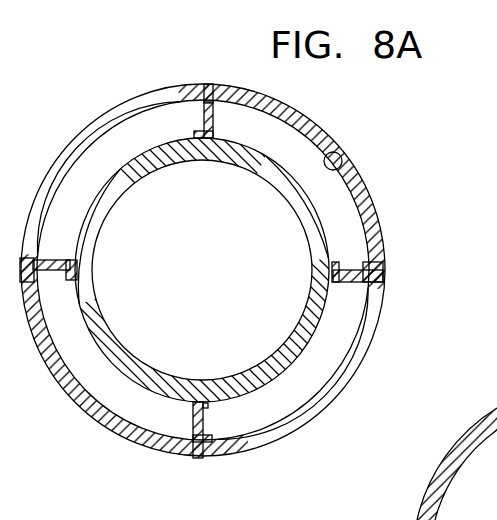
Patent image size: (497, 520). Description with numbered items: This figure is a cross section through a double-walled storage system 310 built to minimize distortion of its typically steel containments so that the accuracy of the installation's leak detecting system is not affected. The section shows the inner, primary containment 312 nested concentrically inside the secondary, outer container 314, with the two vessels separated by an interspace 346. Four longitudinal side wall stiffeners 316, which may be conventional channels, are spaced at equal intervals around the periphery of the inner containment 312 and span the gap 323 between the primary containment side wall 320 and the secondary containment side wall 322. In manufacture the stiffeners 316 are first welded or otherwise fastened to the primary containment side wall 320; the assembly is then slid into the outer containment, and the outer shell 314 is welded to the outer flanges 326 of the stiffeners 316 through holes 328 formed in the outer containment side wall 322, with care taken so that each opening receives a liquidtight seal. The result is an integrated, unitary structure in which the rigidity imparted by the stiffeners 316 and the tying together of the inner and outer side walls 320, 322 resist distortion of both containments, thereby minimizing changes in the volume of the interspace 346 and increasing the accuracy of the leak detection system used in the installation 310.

The storage system 310 is at (386, 121).
The inner, primary containment 312 is at (338, 216).
The secondary, outer container 314 is at (399, 307).
The longitudinal side wall stiffeners 316 is at (228, 110).
The primary containment side wall 320 is at (272, 390).
The secondary containment side wall 322 is at (333, 402).
The gap 323 is at (338, 357).
The outer flanges 326 is at (200, 103).
The holes 328 is at (205, 85).
The interspace 346 is at (344, 161).